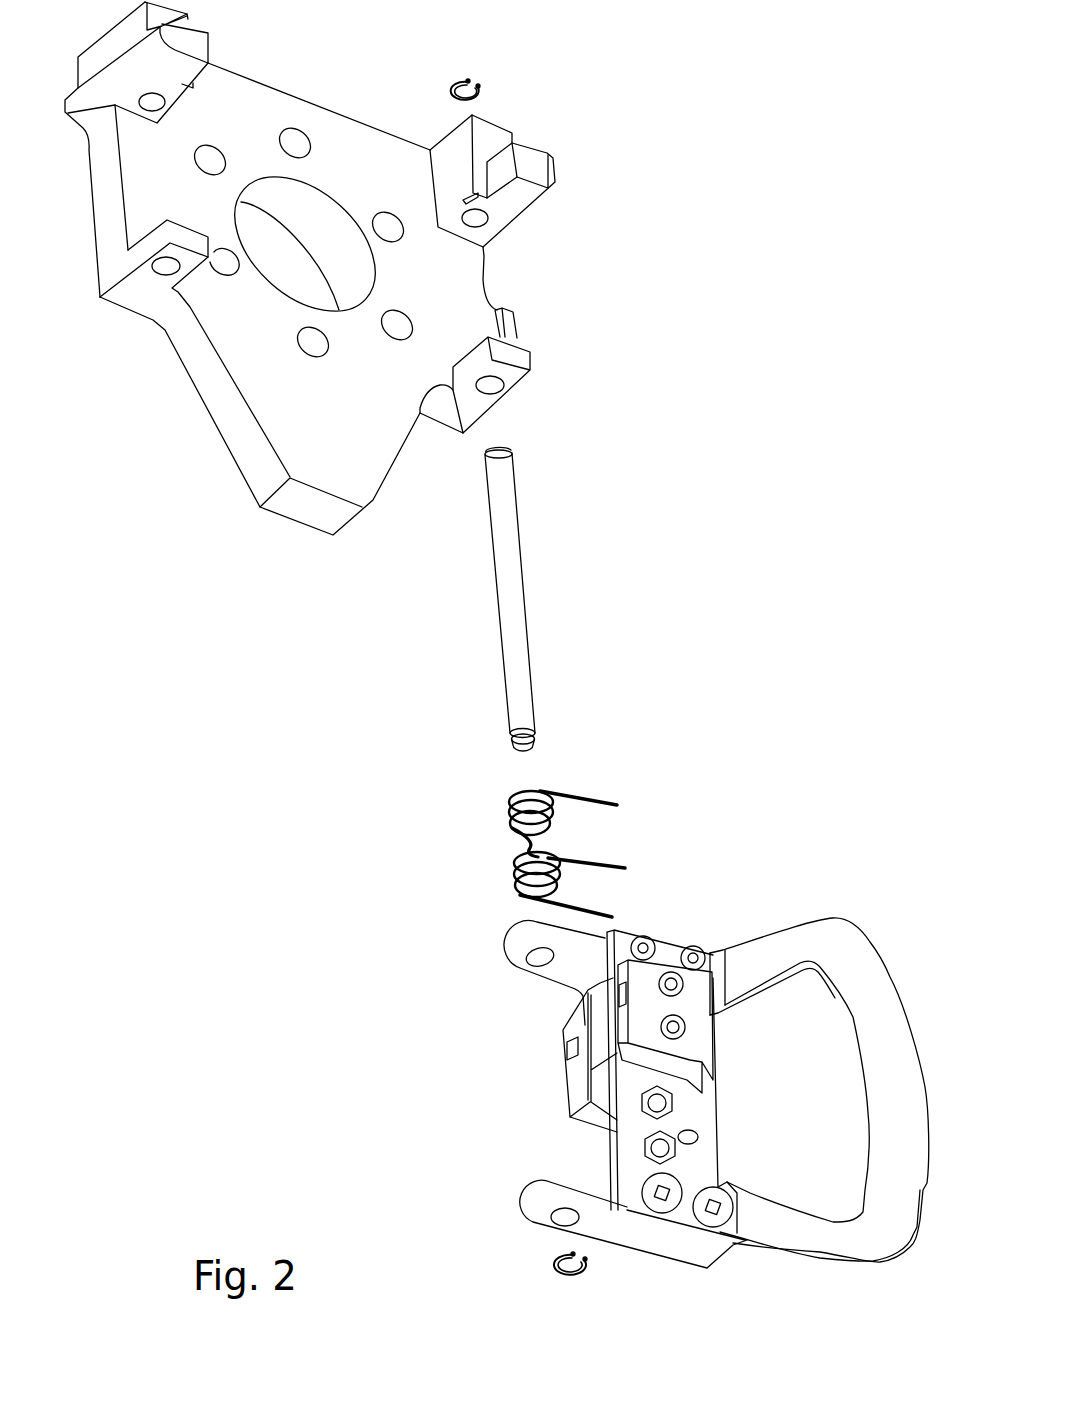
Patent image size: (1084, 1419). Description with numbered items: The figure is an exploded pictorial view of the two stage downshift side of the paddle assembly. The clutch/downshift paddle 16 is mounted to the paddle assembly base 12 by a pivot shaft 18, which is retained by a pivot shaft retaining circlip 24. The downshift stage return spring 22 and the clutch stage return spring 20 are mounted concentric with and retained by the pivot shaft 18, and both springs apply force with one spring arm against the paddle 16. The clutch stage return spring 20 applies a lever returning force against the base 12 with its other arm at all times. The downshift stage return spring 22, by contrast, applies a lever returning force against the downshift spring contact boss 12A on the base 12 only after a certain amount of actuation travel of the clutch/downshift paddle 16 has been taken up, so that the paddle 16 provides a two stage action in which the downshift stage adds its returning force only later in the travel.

The paddle assembly base 12 is at (467, 277).
The downshift spring contact boss 12A is at (508, 326).
The clutch/downshift paddle 16 is at (885, 1060).
The pivot shaft 18 is at (502, 542).
The clutch stage return spring 20 is at (588, 803).
The downshift stage return spring 22 is at (595, 868).
The pivot shaft retaining circlip 24 is at (553, 1265).